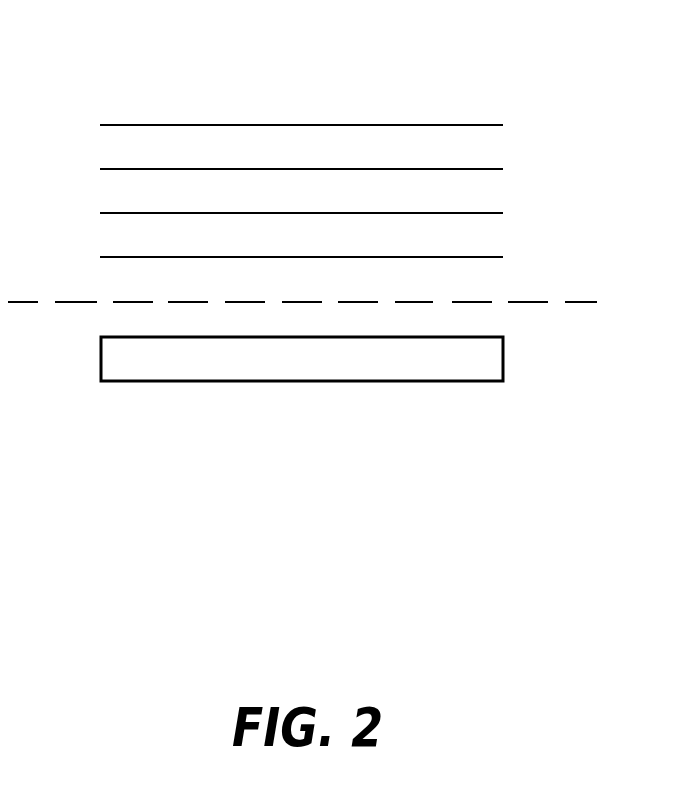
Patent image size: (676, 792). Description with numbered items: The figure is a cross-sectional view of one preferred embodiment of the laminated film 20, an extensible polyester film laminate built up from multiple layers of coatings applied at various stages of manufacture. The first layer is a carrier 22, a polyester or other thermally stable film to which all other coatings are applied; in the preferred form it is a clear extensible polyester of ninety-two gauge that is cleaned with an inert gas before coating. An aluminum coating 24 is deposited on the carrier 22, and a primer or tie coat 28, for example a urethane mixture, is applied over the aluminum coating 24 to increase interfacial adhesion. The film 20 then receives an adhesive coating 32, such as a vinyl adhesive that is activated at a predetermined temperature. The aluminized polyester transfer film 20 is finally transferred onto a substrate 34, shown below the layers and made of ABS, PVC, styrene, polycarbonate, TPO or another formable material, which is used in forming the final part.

The laminated film 20 is at (293, 88).
The carrier 22 is at (487, 125).
The aluminum coating 24 is at (487, 169).
The tie coat 28 is at (487, 213).
The adhesive coating 32 is at (487, 257).
The substrate 34 is at (503, 364).